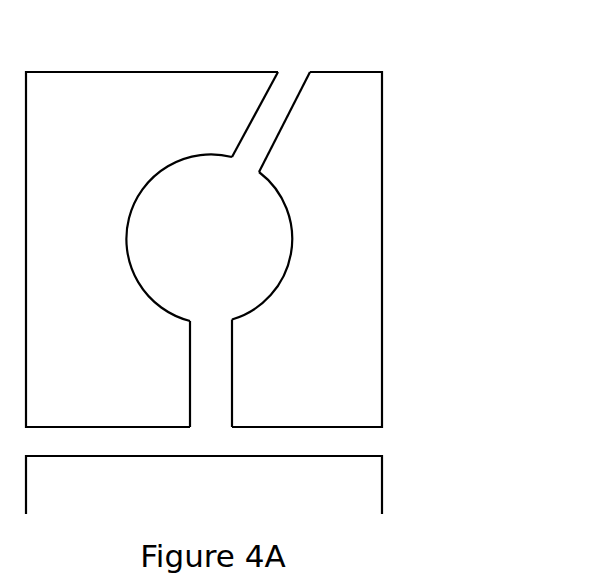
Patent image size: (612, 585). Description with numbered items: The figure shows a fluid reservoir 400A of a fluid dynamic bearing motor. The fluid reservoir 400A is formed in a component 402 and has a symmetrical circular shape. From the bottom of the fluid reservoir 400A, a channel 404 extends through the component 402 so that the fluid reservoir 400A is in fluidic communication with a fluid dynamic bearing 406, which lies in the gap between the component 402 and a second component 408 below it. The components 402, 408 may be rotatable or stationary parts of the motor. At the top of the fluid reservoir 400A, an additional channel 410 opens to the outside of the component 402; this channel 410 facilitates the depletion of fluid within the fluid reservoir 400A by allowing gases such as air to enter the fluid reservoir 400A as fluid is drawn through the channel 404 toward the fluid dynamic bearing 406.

The fluid reservoir 400A is at (209, 237).
The component 402 is at (204, 249).
The channel 404 is at (232, 379).
The fluid dynamic bearing 406 is at (395, 432).
The component 408 is at (204, 485).
The channel 410 is at (288, 118).